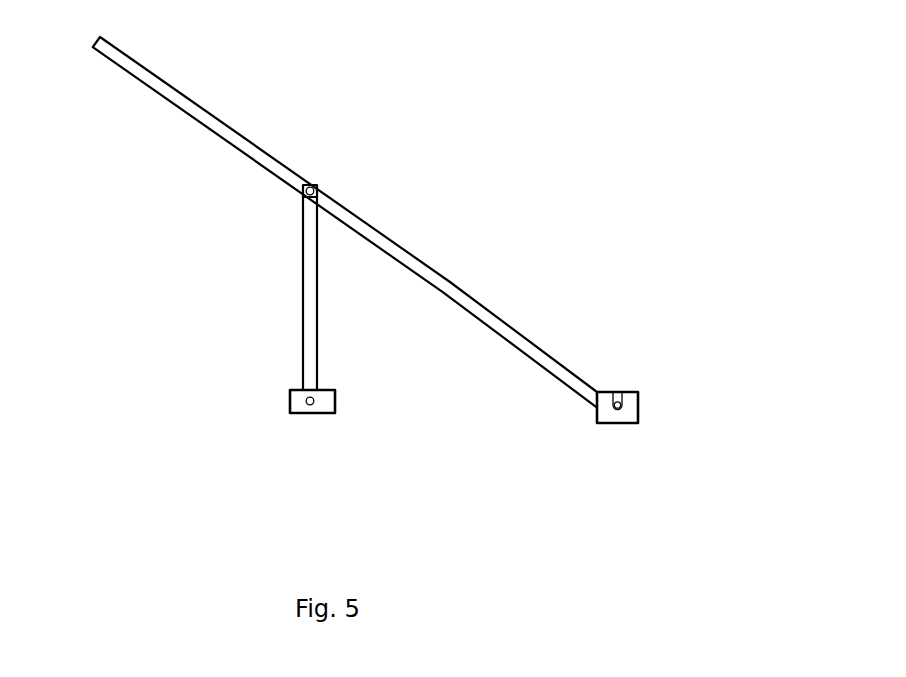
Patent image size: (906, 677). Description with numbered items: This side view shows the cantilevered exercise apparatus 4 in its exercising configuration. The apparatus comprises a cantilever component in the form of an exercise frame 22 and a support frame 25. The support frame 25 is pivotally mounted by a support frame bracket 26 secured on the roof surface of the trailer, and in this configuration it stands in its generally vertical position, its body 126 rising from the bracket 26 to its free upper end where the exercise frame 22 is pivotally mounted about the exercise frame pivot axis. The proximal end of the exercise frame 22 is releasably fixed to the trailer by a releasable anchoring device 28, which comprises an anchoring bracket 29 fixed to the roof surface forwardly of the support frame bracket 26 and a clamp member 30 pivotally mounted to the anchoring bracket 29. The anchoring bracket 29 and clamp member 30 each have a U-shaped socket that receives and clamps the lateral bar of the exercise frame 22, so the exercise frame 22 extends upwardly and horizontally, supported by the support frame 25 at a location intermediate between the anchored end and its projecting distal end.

The cantilevered exercise apparatus 4 is at (420, 191).
The exercise frame 22 is at (247, 148).
The support frame 25 is at (290, 251).
The strut body 126 is at (308, 288).
The support frame bracket 26 is at (295, 398).
The releasable anchoring device 28 is at (649, 428).
The anchoring bracket 29 is at (598, 416).
The clamp member 30 is at (617, 390).